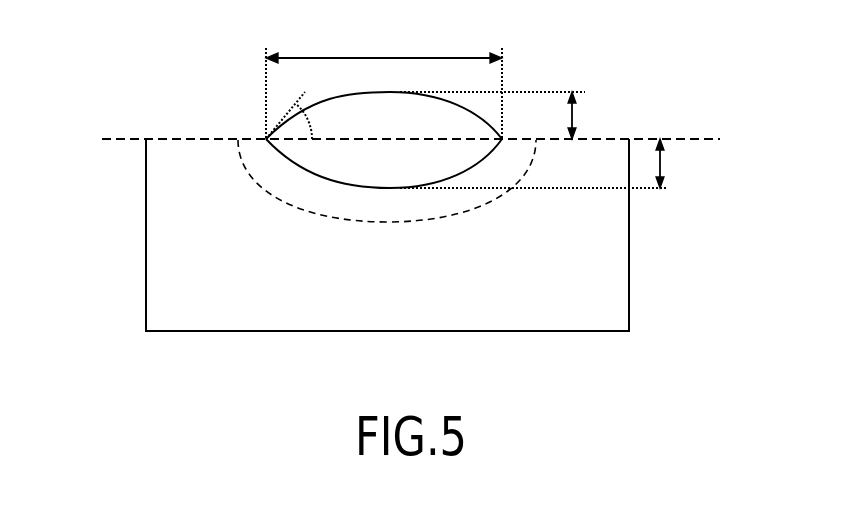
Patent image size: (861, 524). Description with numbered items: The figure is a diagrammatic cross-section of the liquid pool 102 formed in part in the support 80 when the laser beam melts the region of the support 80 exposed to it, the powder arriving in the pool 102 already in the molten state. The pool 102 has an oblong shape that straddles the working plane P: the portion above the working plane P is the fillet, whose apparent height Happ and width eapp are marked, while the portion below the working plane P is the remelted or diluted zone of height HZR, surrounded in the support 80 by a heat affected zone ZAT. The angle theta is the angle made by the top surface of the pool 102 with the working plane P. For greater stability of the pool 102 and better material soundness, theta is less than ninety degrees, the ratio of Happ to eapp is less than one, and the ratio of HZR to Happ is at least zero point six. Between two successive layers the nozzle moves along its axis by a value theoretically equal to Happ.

The support 80 is at (183, 238).
The pool 102 is at (355, 117).
The working plane P is at (425, 140).
The heat affected zone ZAT is at (457, 203).
The apparent width of the fillet eapp is at (384, 84).
The apparent height of the fillet Happ is at (513, 115).
The height of the remelted zone HZR is at (552, 163).
The angle theta is at (289, 114).